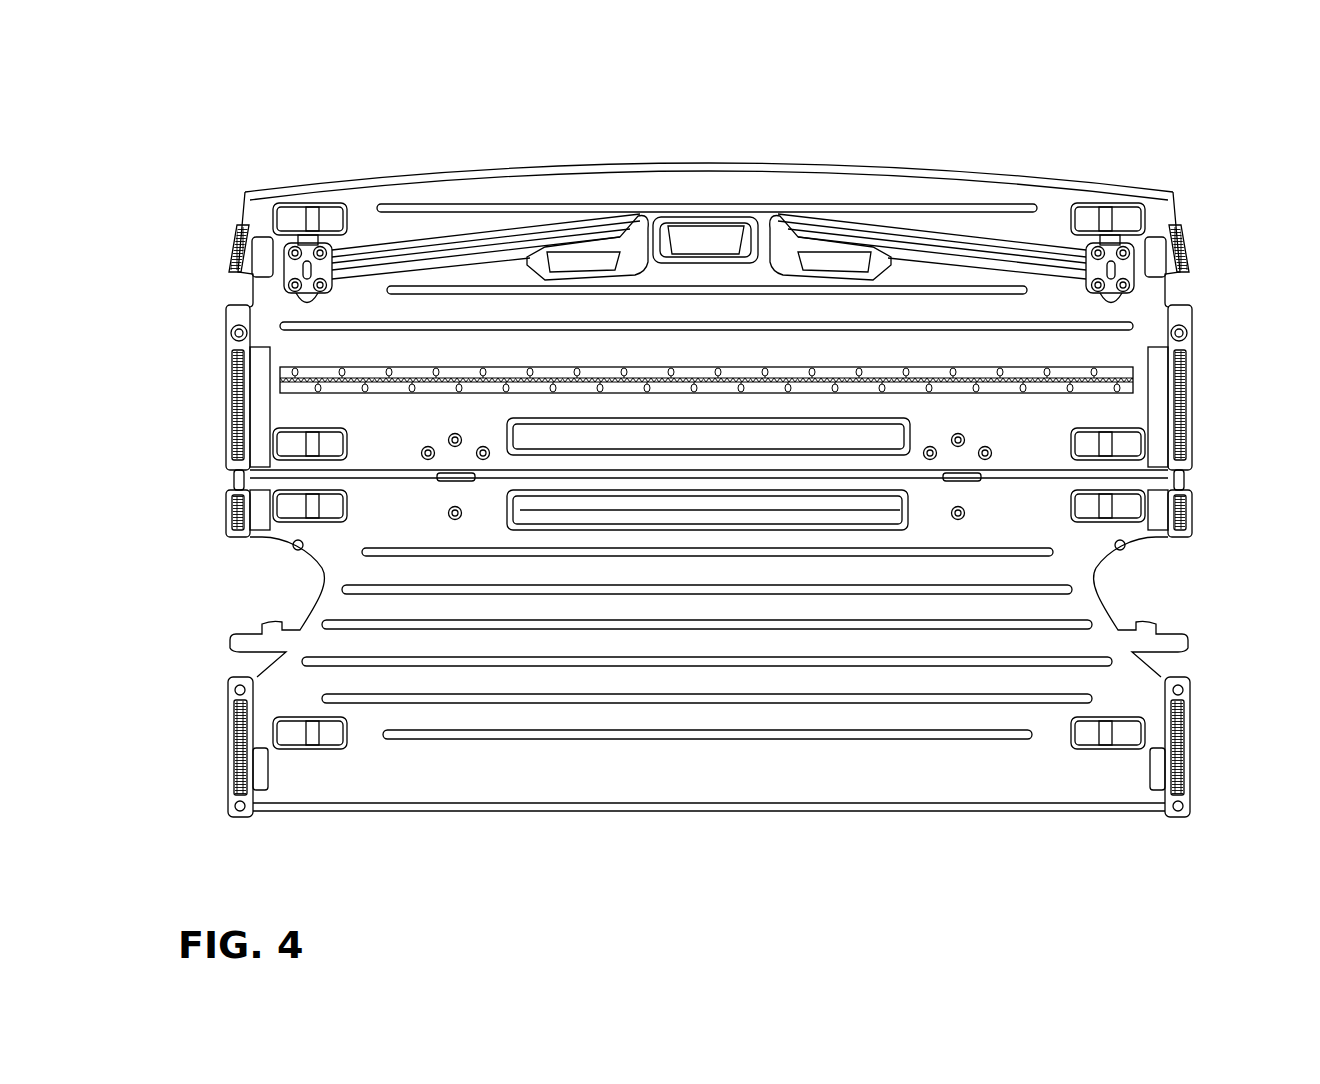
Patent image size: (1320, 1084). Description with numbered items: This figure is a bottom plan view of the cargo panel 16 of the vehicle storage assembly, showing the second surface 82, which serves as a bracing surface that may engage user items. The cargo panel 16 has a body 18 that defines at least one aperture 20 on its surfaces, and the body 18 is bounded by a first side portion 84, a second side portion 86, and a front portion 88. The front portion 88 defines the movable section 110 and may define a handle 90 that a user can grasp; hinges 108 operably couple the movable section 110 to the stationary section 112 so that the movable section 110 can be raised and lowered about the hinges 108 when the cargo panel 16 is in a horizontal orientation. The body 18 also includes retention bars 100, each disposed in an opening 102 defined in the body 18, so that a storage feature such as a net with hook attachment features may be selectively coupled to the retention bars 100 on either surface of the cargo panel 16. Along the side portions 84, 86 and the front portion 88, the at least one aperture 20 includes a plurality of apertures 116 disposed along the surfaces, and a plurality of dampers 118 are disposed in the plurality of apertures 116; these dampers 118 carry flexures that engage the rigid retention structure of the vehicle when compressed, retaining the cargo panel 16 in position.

The cargo panel 16 is at (1186, 152).
The body 18 is at (512, 235).
The aperture 20 is at (1178, 706).
The second surface 82 is at (710, 193).
The first side portion 84 is at (267, 341).
The second side portion 86 is at (1145, 318).
The front portion 88 is at (866, 170).
The handle 90 is at (748, 225).
The retention bars 100 is at (318, 210).
The opening 102 is at (292, 210).
The hinges 108 is at (960, 473).
The movable section 110 is at (924, 196).
The stationary section 112 is at (1033, 770).
The plurality of apertures 116 is at (240, 232).
The plurality of dampers 118 is at (238, 256).